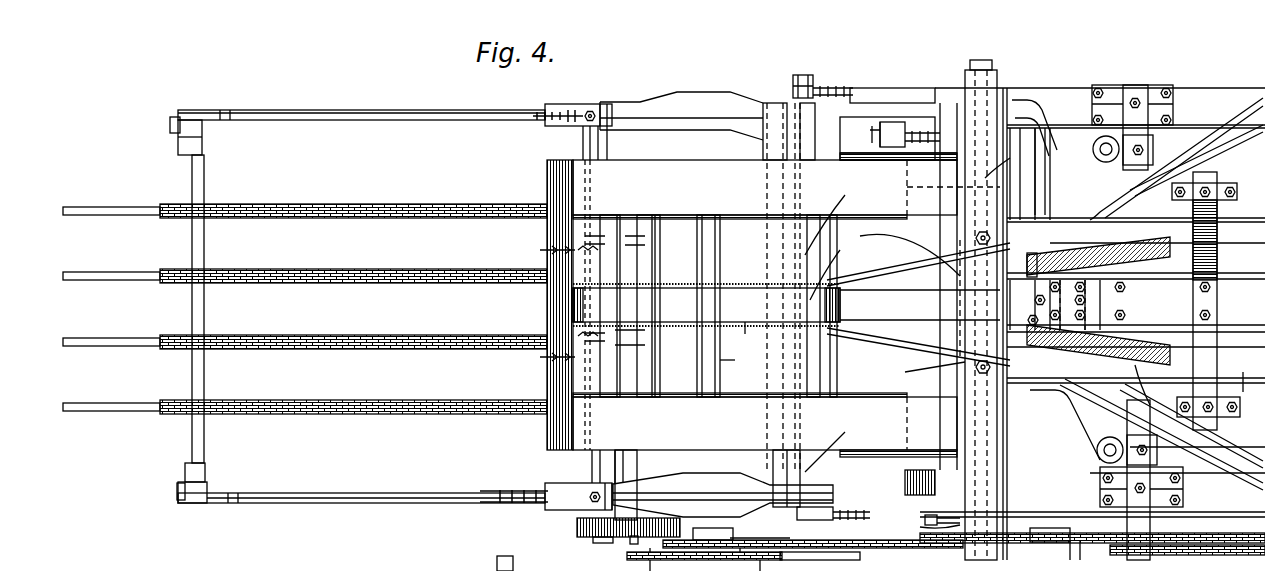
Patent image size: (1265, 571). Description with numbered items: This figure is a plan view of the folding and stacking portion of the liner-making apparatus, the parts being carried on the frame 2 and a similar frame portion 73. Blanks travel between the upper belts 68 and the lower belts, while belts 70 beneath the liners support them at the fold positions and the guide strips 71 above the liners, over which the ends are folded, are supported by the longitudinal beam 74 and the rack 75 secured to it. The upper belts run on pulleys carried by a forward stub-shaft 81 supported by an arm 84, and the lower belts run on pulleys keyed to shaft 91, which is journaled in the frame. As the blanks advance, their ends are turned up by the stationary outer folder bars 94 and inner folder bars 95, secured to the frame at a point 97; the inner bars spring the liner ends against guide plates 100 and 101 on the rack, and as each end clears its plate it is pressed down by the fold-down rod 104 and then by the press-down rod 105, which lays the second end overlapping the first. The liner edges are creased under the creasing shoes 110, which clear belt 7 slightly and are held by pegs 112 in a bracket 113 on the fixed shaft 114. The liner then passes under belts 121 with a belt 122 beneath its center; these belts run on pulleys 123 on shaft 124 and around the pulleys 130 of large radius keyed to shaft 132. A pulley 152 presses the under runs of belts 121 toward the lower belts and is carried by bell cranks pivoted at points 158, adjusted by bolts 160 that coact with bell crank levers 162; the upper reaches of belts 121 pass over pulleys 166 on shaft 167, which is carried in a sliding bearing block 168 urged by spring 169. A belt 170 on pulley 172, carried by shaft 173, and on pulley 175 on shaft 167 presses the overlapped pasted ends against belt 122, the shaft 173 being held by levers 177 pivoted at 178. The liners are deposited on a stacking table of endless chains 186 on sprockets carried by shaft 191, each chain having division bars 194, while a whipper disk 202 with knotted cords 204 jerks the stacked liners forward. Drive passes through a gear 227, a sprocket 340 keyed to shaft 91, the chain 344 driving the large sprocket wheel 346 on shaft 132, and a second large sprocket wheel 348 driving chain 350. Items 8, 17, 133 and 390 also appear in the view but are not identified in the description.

The frame 2 is at (893, 88).
The belt 7 is at (1083, 80).
The section line 8 is at (1170, 80).
The section line 17 is at (1262, 75).
The upper belts 68 is at (1239, 302).
The belts 70 is at (1237, 238).
The guide strips 71 is at (1239, 376).
The frame portion 73 is at (965, 100).
The longitudinal beam 74 is at (1136, 300).
The rack 75 is at (1217, 326).
The forward stub-shaft 81 is at (1033, 301).
The arm 84 is at (1073, 301).
The shaft 91 is at (942, 529).
The outer folder bars 94 is at (1240, 112).
The inner folder bars 95 is at (1210, 140).
The point 97 is at (992, 90).
The guide plate 100 is at (1144, 248).
The guide plate 101 is at (1098, 351).
The fold-down rod 104 is at (1043, 414).
The press-down rod 105 is at (919, 372).
The creasing shoes 110 is at (1068, 160).
The pegs 112 is at (1106, 140).
The bracket 113 is at (1147, 385).
The fixed shaft 114 is at (1099, 304).
The belts 121 is at (640, 236).
The belt 122 is at (880, 280).
The pulleys 123 is at (1000, 422).
The shaft 124 is at (952, 294).
The pulleys of large radius 130 is at (745, 237).
The shaft 132 is at (710, 360).
The bracket bolt 133 is at (1160, 130).
The pulley 152 is at (918, 160).
The pivot points 158 is at (917, 138).
The adjustment bolts 160 is at (910, 127).
The bell crank levers 162 is at (986, 170).
The pulleys 166 is at (569, 160).
The shaft 167 is at (620, 269).
The sliding bearing block 168 is at (612, 104).
The spring 169 is at (566, 108).
The belt 170 is at (747, 336).
The pulley 172 is at (834, 267).
The shaft 173 is at (832, 217).
The pulley 175 is at (630, 326).
The levers 177 is at (813, 84).
The pivot 178 is at (836, 518).
The endless chains 186 is at (262, 222).
The shaft 191 is at (192, 440).
The division bars 194 is at (322, 218).
The whipper disk 202 is at (582, 239).
The cords 204 is at (548, 250).
The gear 227 is at (832, 444).
The sprocket 340 is at (1025, 541).
The chain 344 is at (948, 543).
The large sprocket wheel 346 is at (772, 540).
The second large sprocket wheel 348 is at (815, 553).
The chain 350 is at (625, 556).
The block 390 is at (513, 562).